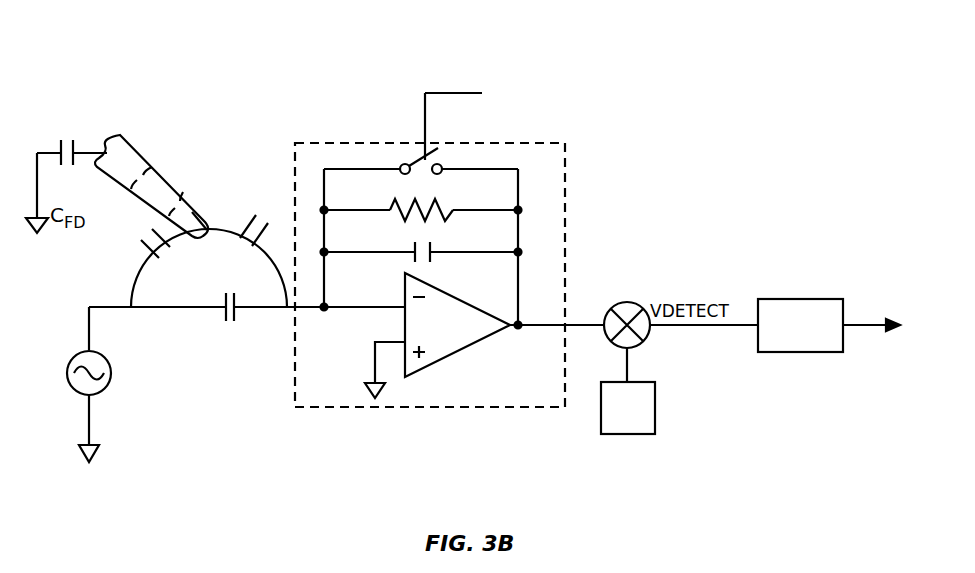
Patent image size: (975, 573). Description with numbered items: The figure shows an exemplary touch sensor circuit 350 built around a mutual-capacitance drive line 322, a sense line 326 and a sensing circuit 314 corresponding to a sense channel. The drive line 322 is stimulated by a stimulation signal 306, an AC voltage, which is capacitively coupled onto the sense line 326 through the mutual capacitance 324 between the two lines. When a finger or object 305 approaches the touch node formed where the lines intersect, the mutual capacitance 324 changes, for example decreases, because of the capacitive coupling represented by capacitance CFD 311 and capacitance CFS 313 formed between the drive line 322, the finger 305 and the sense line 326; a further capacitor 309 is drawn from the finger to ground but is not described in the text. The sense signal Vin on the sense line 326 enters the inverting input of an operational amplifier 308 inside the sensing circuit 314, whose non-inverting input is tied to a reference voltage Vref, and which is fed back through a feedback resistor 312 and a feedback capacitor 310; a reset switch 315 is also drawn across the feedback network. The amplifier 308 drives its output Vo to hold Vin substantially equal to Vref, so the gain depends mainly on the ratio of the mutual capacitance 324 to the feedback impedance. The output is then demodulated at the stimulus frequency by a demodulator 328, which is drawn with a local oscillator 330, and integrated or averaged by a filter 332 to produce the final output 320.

The touch sensor circuit 350 is at (155, 86).
The finger-to-device capacitor 309 is at (67, 140).
The finger or object 305 is at (145, 172).
The capacitance CFD 311 is at (141, 252).
The capacitance CFS 313 is at (252, 234).
The drive line 322 is at (106, 306).
The mutual capacitance 324 is at (222, 300).
The stimulation signal 306 is at (111, 373).
The sense line 326 is at (262, 310).
The sensing circuit 314 is at (340, 143).
The reset switch 315 is at (417, 162).
The feedback resistor 312 is at (452, 206).
The feedback capacitor 310 is at (436, 250).
The operational amplifier 308 is at (453, 353).
The demodulator 328 is at (626, 300).
The filter 332 is at (800, 299).
The output 320 is at (863, 321).
The local oscillator 330 is at (628, 436).